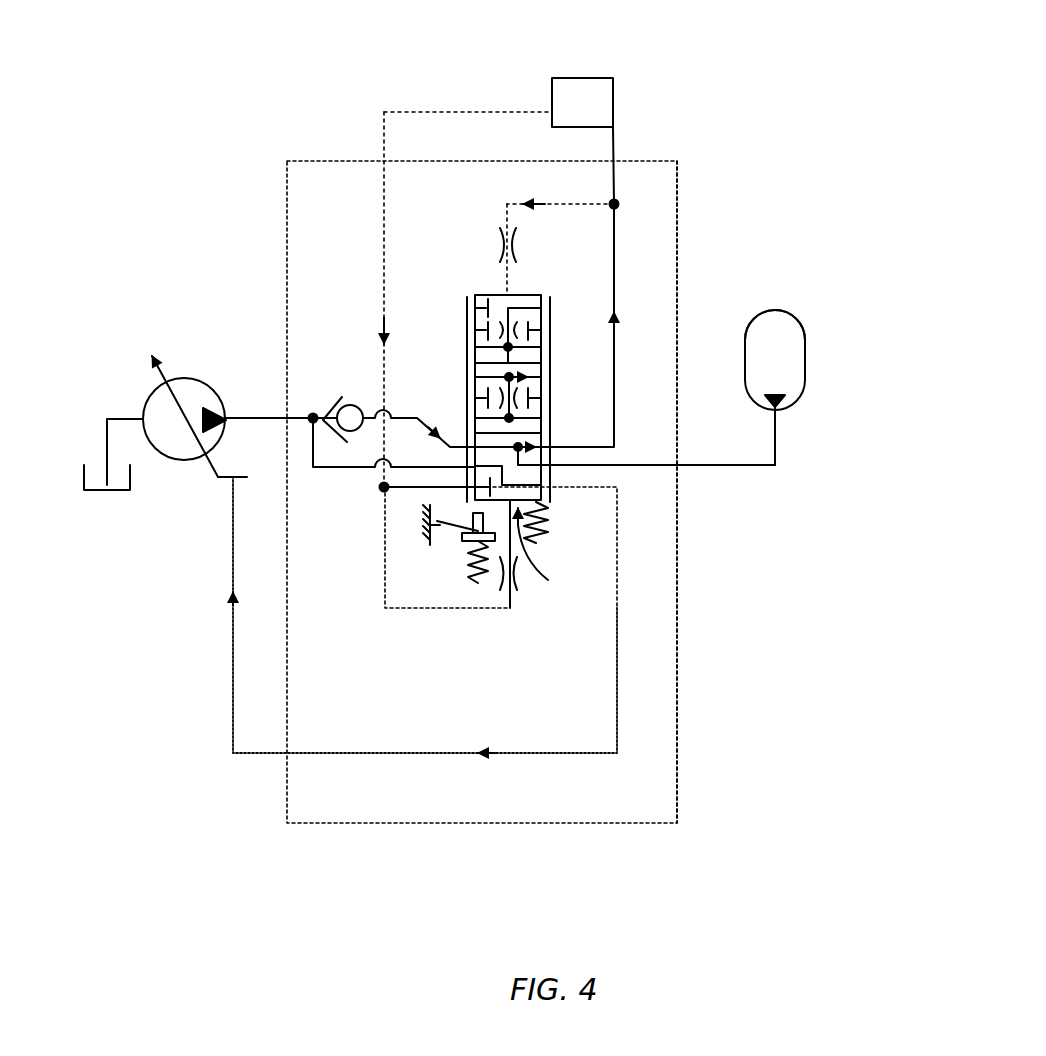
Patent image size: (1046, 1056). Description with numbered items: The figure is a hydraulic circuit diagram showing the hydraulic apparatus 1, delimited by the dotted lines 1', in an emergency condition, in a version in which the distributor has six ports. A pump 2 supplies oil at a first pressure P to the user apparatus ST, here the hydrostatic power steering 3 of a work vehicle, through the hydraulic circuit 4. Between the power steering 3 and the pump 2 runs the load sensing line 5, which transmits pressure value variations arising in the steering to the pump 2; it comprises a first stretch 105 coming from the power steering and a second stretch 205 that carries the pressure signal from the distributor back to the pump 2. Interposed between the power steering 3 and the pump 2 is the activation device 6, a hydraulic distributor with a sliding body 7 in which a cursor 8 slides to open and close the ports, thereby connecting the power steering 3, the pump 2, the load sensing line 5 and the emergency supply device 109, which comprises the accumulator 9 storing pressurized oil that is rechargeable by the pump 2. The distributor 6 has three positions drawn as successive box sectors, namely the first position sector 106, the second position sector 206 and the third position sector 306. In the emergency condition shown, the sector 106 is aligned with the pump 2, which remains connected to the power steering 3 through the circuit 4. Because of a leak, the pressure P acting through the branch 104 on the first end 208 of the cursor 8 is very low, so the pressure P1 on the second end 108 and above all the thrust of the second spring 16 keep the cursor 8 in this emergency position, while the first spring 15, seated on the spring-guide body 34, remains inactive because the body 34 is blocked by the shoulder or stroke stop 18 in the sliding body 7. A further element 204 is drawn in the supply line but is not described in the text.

The hydraulic apparatus 1 is at (482, 558).
The dotted lines 1' is at (700, 492).
The pump 2 is at (183, 364).
The hydrostatic power steering 3 is at (580, 78).
The hydraulic circuit 4 is at (616, 178).
The load sensing line 5 is at (386, 214).
The activation device 6 is at (474, 266).
The sliding body 7 is at (466, 320).
The cursor 8 is at (468, 388).
The accumulator 9 is at (762, 342).
The first spring 15 is at (478, 566).
The second spring 16 is at (540, 535).
The shoulder or stroke stop 18 is at (432, 514).
The spring-guide body 34 is at (478, 528).
The branch 104 is at (566, 198).
The first stretch of the load sensing line 105 is at (384, 262).
The first position sector 106 is at (536, 455).
The second end of the cursor 108 is at (558, 561).
The emergency supply device 109 is at (767, 298).
The check valve 204 is at (343, 393).
The second stretch of the load sensing line 205 is at (377, 752).
The second position sector 206 is at (546, 388).
The first end of the cursor 208 is at (522, 292).
The third position sector 306 is at (532, 318).